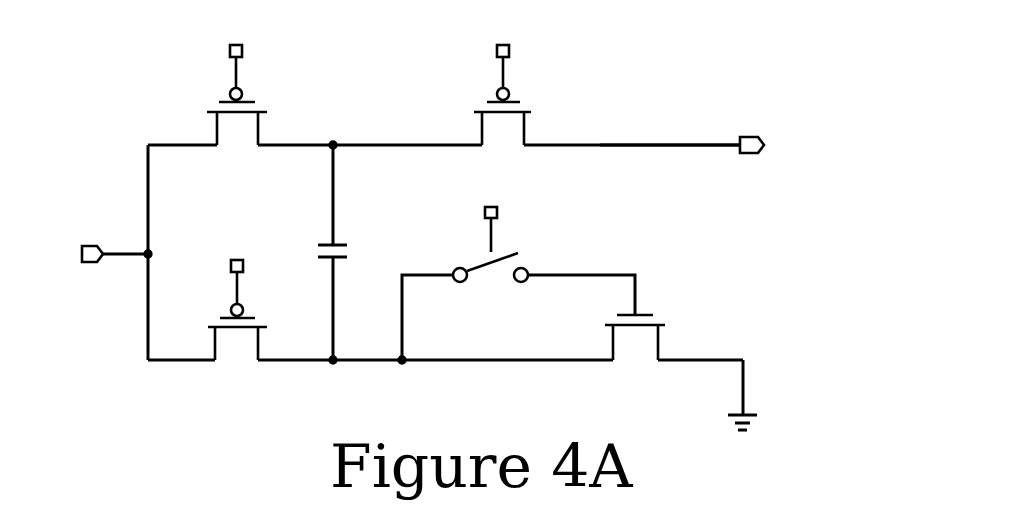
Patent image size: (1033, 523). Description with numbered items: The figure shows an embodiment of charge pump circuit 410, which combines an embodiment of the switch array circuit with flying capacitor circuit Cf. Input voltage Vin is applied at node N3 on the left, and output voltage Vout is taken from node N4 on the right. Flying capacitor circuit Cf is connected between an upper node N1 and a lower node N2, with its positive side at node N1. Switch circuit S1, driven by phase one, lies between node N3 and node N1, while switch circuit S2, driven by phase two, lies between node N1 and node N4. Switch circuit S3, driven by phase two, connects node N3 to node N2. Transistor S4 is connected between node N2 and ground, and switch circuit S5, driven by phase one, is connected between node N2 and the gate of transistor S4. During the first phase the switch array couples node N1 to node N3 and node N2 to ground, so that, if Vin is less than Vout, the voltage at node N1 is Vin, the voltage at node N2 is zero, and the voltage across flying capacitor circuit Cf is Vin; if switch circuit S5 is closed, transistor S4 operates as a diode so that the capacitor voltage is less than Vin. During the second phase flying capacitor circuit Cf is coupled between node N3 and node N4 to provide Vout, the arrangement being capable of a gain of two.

The charge pump circuit 410 is at (652, 46).
The switch circuit S1 is at (250, 77).
The switch circuit S2 is at (520, 77).
The switch circuit S3 is at (250, 290).
The transistor S4 is at (681, 371).
The switch circuit S5 is at (516, 267).
The node N1 is at (335, 143).
The node N2 is at (334, 363).
The node N3 is at (146, 256).
The node N4 is at (661, 144).
The flying capacitor circuit Cf is at (352, 252).
The input voltage Vin is at (67, 249).
The output voltage Vout is at (781, 147).